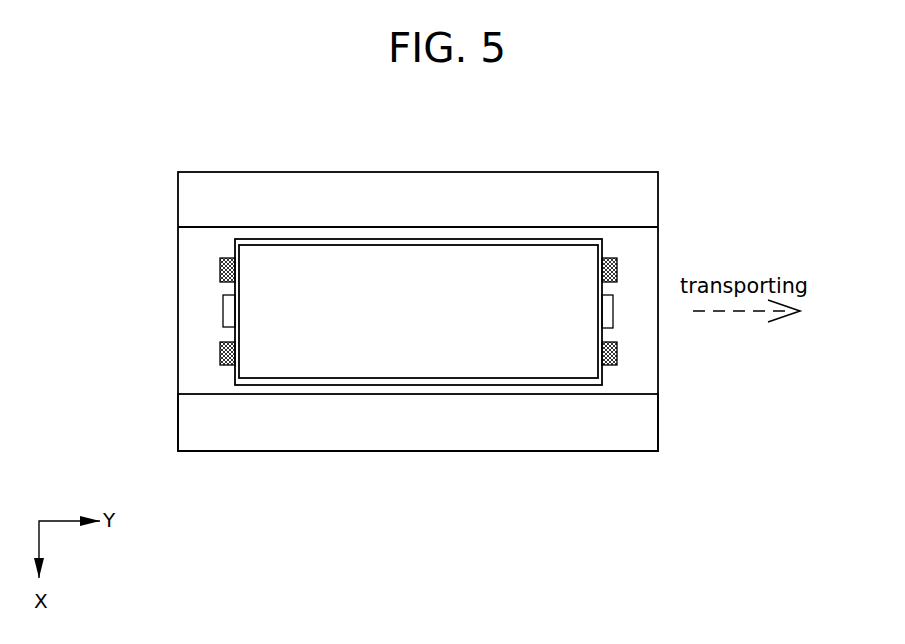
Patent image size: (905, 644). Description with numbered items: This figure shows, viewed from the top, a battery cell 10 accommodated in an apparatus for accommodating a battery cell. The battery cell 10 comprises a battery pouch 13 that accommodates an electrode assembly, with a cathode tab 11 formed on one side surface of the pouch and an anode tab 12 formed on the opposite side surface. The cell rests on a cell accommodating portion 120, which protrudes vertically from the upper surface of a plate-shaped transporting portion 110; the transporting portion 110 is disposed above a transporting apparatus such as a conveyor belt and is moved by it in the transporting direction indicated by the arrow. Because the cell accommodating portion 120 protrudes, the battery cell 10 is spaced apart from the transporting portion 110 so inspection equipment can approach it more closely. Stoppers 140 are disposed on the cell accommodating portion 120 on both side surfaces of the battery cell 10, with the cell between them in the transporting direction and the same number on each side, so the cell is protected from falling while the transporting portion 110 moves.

The battery cell 10 is at (318, 257).
The cathode tab 11 is at (223, 312).
The anode tab 12 is at (613, 315).
The battery pouch 13 is at (314, 385).
The transporting portion 110 is at (178, 422).
The cell accommodating portion 120 is at (178, 357).
The stopper 140 is at (220, 269).